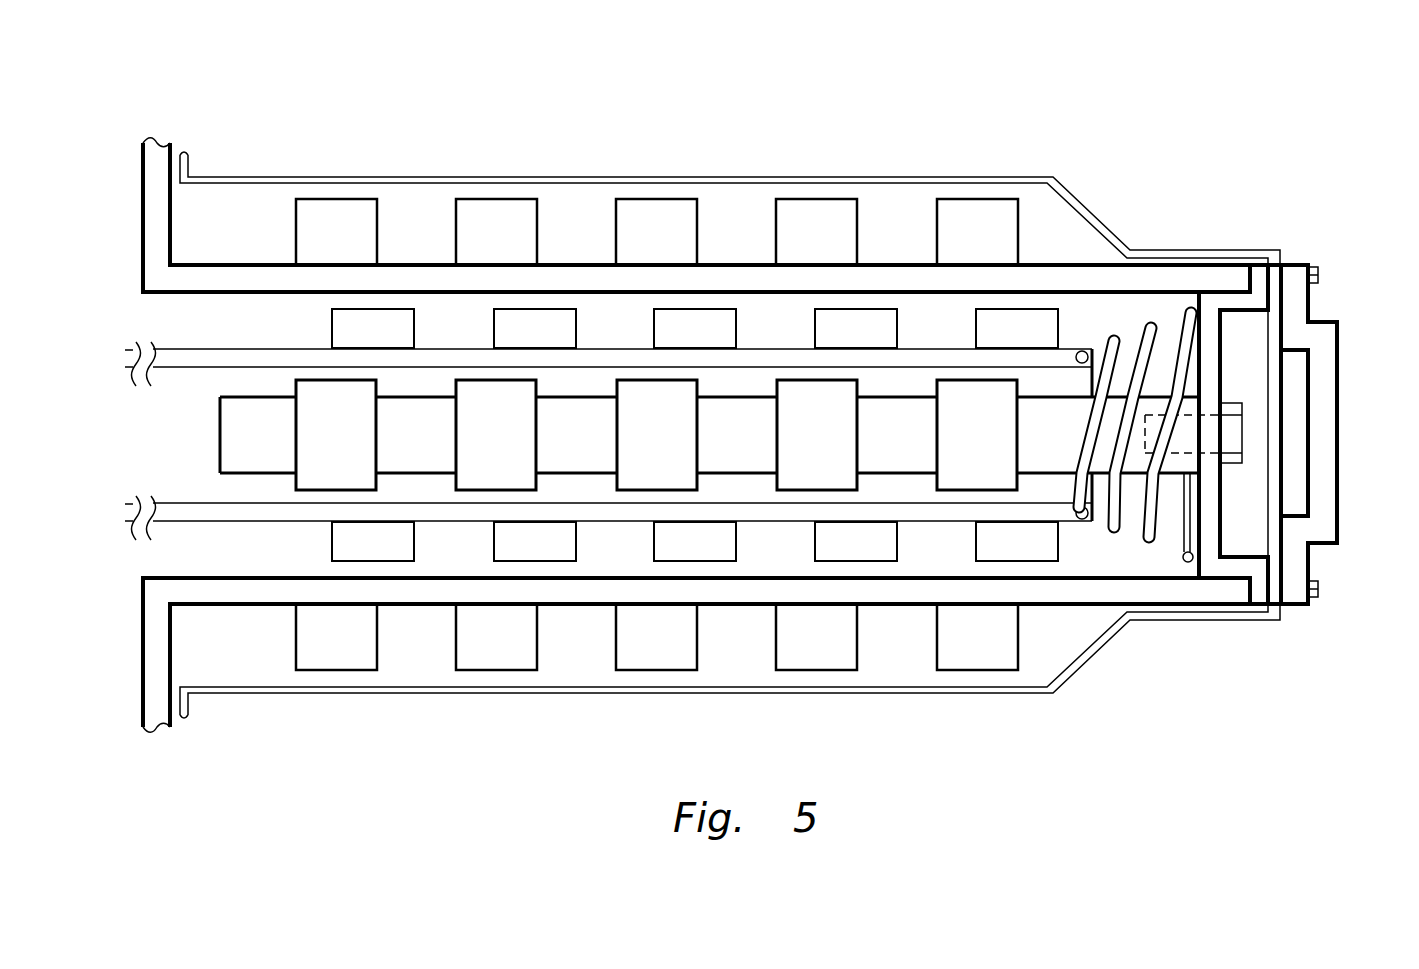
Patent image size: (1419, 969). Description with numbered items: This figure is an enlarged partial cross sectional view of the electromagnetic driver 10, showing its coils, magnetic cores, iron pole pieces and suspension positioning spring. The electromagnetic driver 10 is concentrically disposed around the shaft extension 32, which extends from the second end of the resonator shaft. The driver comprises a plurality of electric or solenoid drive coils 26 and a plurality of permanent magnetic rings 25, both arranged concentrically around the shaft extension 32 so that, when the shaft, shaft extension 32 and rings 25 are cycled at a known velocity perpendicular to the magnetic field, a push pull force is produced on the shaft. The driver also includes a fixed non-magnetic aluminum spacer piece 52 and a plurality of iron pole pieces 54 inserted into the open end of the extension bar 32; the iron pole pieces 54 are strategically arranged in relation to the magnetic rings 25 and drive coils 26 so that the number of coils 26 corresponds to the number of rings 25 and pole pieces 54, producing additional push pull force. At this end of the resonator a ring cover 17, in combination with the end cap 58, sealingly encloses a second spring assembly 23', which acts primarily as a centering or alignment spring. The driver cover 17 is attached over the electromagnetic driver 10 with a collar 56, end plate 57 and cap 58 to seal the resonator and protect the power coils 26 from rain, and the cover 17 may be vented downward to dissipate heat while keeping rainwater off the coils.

The electromagnetic driver 10 is at (790, 152).
The driver cover 17 is at (1023, 176).
The centering spring 23' is at (1178, 366).
The permanent magnetic rings 25 is at (695, 435).
The electric drive coils 26 is at (657, 434).
The magnetic shaft extension 32 is at (185, 348).
The non-magnetic aluminum spacer piece 52 is at (245, 395).
The iron pole pieces 54 is at (995, 455).
The collar 56 is at (1262, 301).
The end plate 57 is at (1283, 412).
The end cap 58 is at (1337, 497).